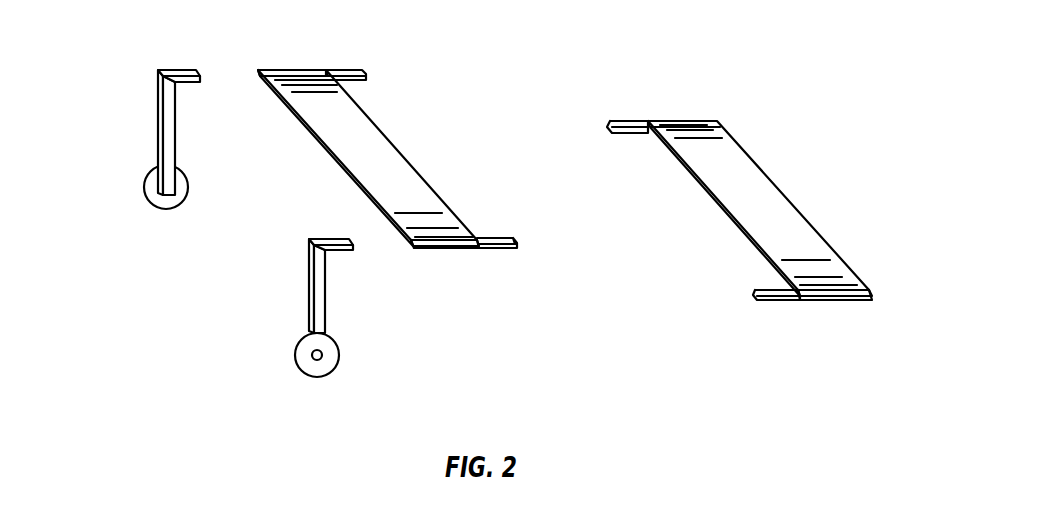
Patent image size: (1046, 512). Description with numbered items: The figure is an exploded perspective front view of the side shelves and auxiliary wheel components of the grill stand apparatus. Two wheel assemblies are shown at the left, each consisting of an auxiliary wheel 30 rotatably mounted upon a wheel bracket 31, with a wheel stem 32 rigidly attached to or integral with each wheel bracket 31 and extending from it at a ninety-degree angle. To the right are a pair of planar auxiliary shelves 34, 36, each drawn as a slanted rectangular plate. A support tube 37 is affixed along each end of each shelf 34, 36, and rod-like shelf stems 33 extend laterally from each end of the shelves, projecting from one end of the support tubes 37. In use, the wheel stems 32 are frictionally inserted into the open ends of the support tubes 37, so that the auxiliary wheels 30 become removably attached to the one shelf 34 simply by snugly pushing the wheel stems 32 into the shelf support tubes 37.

The auxiliary wheel 30 is at (150, 188).
The wheel bracket 31 is at (160, 127).
The wheel stem 32 is at (183, 82).
The shelf stem 33 is at (363, 80).
The auxiliary shelf 34 is at (388, 160).
The auxiliary shelf 36 is at (770, 207).
The support tube 37 is at (280, 70).